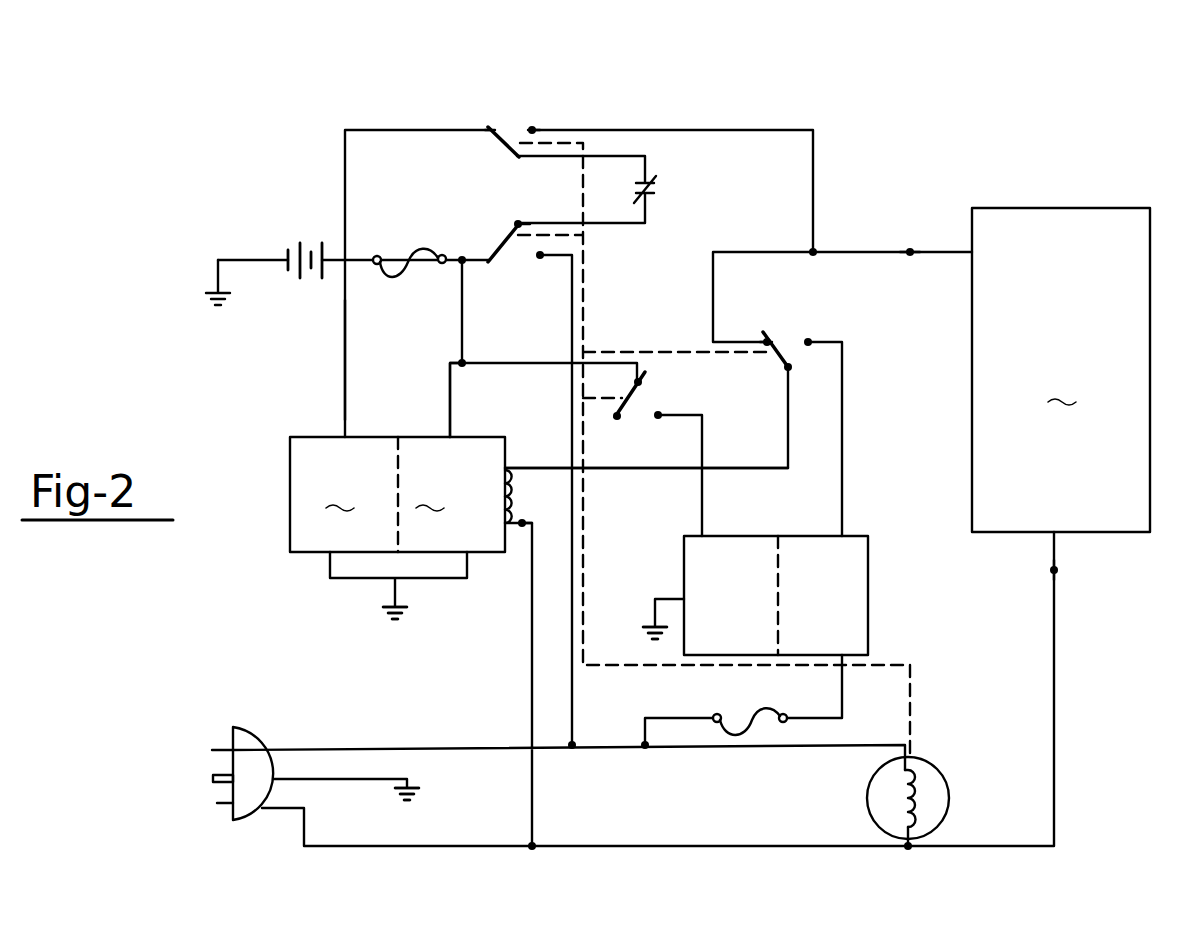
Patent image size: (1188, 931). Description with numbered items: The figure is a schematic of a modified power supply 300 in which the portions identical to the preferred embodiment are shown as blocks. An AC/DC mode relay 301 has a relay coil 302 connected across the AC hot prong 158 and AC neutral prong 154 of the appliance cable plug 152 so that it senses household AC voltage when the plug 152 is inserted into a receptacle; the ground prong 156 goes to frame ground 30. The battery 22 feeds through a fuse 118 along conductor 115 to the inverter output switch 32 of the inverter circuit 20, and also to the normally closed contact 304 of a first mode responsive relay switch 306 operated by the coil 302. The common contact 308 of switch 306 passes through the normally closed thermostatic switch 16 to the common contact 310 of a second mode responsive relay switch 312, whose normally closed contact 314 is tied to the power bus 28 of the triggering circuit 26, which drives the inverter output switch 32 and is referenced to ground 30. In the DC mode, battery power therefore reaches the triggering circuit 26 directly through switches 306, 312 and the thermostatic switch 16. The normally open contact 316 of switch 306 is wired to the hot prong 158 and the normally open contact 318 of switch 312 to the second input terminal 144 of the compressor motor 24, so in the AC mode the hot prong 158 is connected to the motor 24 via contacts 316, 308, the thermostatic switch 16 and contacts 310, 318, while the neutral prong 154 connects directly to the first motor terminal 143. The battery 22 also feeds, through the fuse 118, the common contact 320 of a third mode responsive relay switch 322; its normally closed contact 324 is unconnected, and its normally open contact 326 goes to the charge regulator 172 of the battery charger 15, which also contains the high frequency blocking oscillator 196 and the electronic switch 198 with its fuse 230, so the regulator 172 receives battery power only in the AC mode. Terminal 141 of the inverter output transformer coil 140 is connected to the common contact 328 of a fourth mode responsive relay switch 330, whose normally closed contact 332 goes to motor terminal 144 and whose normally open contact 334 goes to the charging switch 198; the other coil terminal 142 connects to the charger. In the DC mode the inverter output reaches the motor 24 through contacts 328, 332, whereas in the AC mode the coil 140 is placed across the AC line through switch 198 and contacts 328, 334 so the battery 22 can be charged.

The battery charger 15 is at (865, 535).
The thermostatic switch 16 is at (666, 190).
The inverter circuit 20 is at (298, 441).
The battery 22 is at (301, 243).
The compressor motor 24 is at (1061, 370).
The triggering circuit 26 is at (340, 492).
The power bus 28 is at (345, 338).
The frame ground 30 is at (216, 280).
The inverter output switch 32 is at (430, 492).
The conductor 115 is at (452, 392).
The fuse 118 is at (440, 250).
The inverter output transformer coil 140 is at (514, 492).
The terminal 141 is at (532, 467).
The second terminal 142 is at (522, 527).
The first motor input terminal 143 is at (1056, 571).
The second motor input terminal 144 is at (912, 250).
The appliance cable plug 152 is at (243, 772).
The AC neutral prong 154 is at (220, 805).
The ground prong 156 is at (212, 779).
The AC hot prong 158 is at (220, 748).
The charge regulator 172 is at (730, 577).
The high frequency blocking oscillator 196 is at (730, 603).
The electronic switch 198 is at (822, 589).
The fuse 230 is at (780, 714).
The modified power supply 300 is at (386, 625).
The AC/DC mode relay 301 is at (901, 781).
The relay coil 302 is at (922, 770).
The normally closed contact 304 is at (558, 260).
The first mode responsive relay switch 306 is at (532, 264).
The common contact 308 is at (522, 223).
The common contact 310 is at (510, 152).
The second mode responsive relay switch 312 is at (530, 108).
The normally closed contact 314 is at (490, 126).
The normally open contact 316 is at (545, 255).
The normally open contact 318 is at (533, 128).
The common contact 320 is at (648, 380).
The third mode responsive relay switch 322 is at (691, 380).
The normally closed contact 324 is at (617, 418).
The normally open contact 326 is at (662, 415).
The common contact 328 is at (778, 352).
The fourth mode responsive relay switch 330 is at (847, 339).
The normally closed contact 332 is at (765, 333).
The normally open contact 334 is at (810, 338).